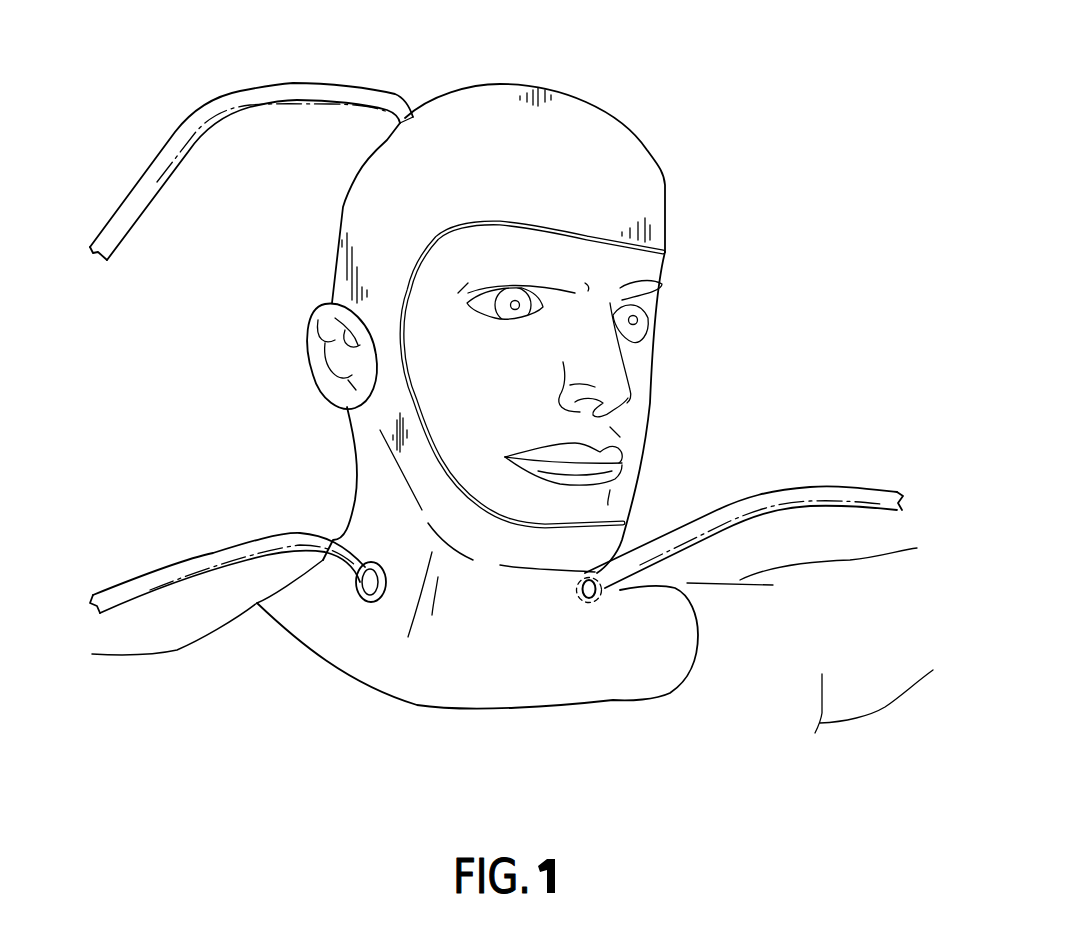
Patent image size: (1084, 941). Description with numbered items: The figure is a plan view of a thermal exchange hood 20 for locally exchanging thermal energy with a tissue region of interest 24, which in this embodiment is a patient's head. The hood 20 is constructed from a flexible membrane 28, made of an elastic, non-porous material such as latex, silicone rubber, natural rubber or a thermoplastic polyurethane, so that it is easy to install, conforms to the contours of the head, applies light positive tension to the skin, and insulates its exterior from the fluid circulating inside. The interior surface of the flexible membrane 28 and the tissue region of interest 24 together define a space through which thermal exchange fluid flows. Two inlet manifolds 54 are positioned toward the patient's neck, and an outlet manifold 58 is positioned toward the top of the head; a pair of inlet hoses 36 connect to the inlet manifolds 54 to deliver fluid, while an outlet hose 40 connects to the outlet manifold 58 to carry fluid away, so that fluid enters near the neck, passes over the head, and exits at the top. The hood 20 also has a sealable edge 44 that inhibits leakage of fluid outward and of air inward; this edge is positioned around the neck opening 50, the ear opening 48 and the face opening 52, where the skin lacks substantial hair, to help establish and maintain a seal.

The thermal exchange hood 20 is at (681, 92).
The tissue region of interest 24 is at (722, 350).
The flexible membrane 28 is at (652, 200).
The inlet hoses 36 is at (177, 565).
The outlet hose 40 is at (238, 88).
The sealable edge 44 is at (660, 258).
The ear opening 48 is at (311, 367).
The neck opening 50 is at (609, 712).
The face opening 52 is at (668, 405).
The inlet manifolds 54 is at (371, 564).
The outlet manifold 58 is at (418, 112).